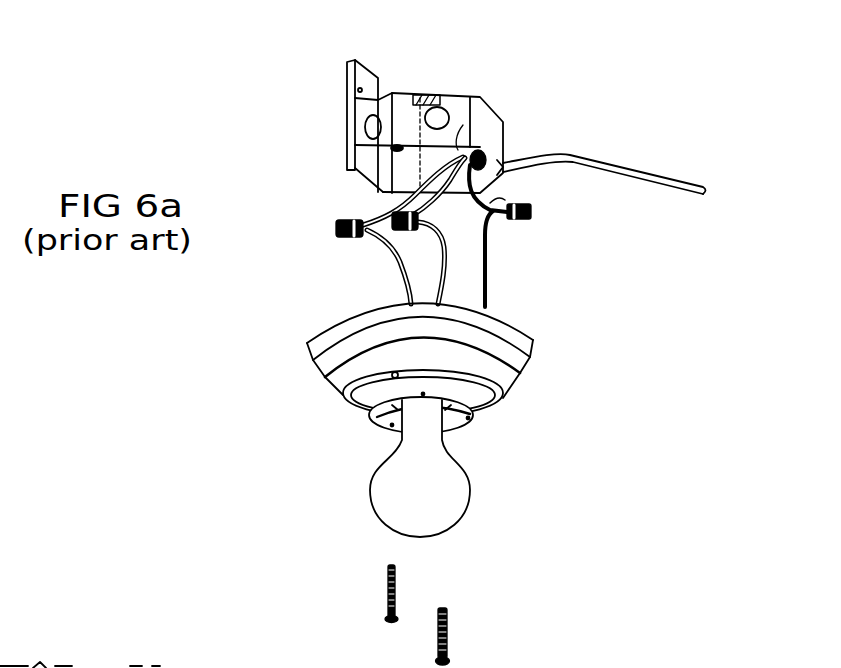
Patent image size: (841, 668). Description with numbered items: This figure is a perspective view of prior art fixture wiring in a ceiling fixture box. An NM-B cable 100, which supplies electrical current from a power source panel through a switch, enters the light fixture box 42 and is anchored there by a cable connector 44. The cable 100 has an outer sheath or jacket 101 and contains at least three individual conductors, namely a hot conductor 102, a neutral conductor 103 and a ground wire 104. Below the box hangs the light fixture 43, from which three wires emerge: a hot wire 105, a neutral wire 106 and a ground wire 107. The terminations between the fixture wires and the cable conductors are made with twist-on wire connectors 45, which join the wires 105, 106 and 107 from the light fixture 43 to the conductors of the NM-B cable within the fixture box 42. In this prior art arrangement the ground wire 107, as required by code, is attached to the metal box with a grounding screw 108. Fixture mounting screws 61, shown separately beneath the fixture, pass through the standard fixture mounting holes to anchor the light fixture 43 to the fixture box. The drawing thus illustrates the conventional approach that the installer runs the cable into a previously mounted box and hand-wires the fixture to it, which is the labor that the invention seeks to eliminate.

The light fixture box 42 is at (383, 112).
The light fixture 43 is at (510, 383).
The cable connector 44 is at (505, 167).
The twist-on wire connectors 45 is at (531, 213).
The fixture mounting screws 61 is at (383, 590).
The NM-B cable 100 is at (650, 170).
The outer sheath or jacket 101 is at (622, 177).
The hot conductor 102 is at (490, 203).
The neutral conductor 103 is at (350, 218).
The ground wire 104 is at (463, 125).
The hot wire 105 is at (490, 288).
The neutral wire 106 is at (367, 232).
The ground wire 107 is at (435, 272).
The grounding screw 108 is at (444, 96).